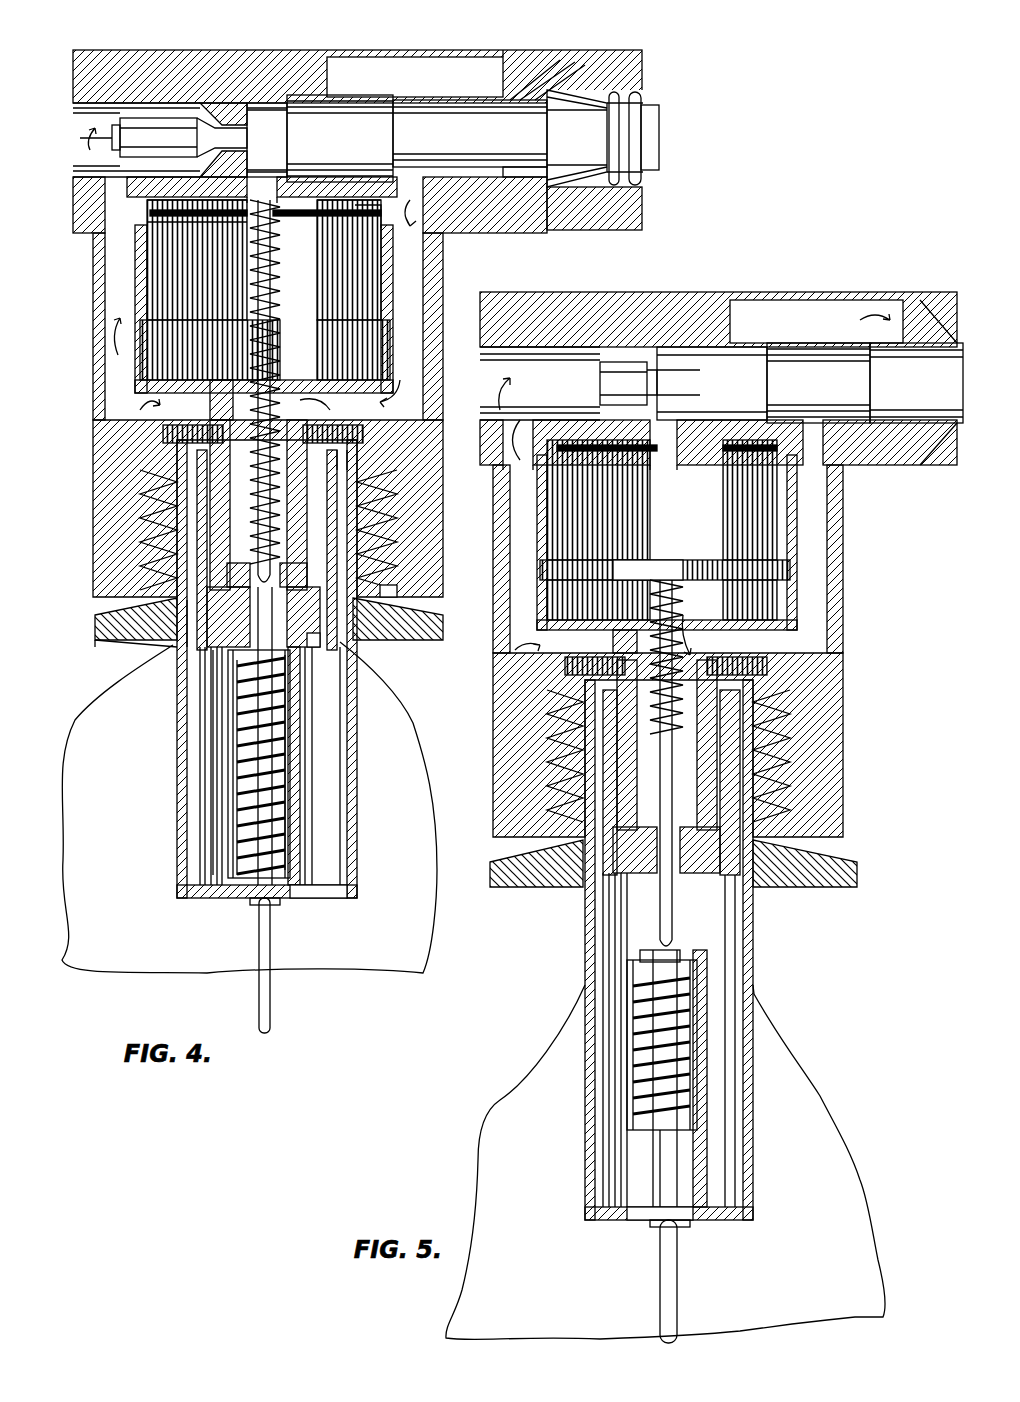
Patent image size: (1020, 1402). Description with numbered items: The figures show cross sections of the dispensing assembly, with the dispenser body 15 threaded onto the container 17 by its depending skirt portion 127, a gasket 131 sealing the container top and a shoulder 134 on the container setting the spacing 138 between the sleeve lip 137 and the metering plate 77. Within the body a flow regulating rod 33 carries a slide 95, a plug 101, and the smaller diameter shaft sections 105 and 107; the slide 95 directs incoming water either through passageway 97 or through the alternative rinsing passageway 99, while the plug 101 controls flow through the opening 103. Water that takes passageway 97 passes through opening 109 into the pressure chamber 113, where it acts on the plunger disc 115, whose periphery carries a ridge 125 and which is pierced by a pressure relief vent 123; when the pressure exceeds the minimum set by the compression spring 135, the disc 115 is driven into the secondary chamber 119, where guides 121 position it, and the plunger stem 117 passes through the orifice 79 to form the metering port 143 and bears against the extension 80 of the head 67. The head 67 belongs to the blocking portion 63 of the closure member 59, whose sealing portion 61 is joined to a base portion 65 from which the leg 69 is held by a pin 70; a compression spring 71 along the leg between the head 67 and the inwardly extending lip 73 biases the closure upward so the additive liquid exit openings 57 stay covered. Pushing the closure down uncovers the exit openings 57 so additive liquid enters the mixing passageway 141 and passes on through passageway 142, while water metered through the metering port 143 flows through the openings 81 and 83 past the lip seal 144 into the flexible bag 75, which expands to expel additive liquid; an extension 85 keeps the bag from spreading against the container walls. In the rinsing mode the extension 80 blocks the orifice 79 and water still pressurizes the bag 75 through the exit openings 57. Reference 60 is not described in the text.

In FIG. 4, the dispenser body 15 is at (580, 39).
In FIG. 5, the dispenser body 15 is at (854, 633).
In FIG. 4, the container 17 is at (98, 647).
In FIG. 4, the flow regulating rod 33 is at (676, 134).
In FIG. 5, the flow regulating rod 33 is at (895, 367).
In FIG. 4, the additive liquid exit openings 57 is at (340, 500).
In FIG. 5, the additive liquid exit openings 57 is at (722, 742).
In FIG. 4, the closure member 59 is at (178, 803).
In FIG. 5, the closure member 59 is at (754, 1123).
In FIG. 4, the sleeve shoulder 60 is at (345, 463).
In FIG. 4, the sealing portion 61 is at (348, 821).
In FIG. 4, the blocking portion 63 is at (250, 727).
In FIG. 5, the blocking portion 63 is at (672, 1160).
In FIG. 4, the base portion 65 is at (302, 898).
In FIG. 4, the head 67 is at (300, 682).
In FIG. 5, the head 67 is at (700, 968).
In FIG. 4, the leg 69 is at (282, 775).
In FIG. 4, the pin 70 is at (278, 902).
In FIG. 5, the pin 70 is at (592, 1242).
In FIG. 4, the compression spring 71 is at (285, 736).
In FIG. 5, the compression spring 71 is at (685, 1043).
In FIG. 4, the inwardly extending lip 73 is at (179, 933).
In FIG. 4, the flexible bag 75 is at (62, 958).
In FIG. 5, the flexible bag 75 is at (473, 1125).
In FIG. 4, the metering plate 77 is at (200, 622).
In FIG. 4, the orifice 79 is at (372, 600).
In FIG. 4, the extension 80 is at (330, 637).
In FIG. 5, the extension 80 is at (650, 957).
In FIG. 4, the openings 81 is at (215, 678).
In FIG. 5, the openings 81 is at (700, 907).
In FIG. 4, the openings 83 is at (320, 897).
In FIG. 5, the openings 83 is at (720, 1220).
In FIG. 4, the extension 85 is at (272, 1000).
In FIG. 4, the slide 95 is at (313, 98).
In FIG. 5, the slide 95 is at (822, 352).
In FIG. 4, the passageway 97 is at (388, 67).
In FIG. 5, the passageway 97 is at (748, 307).
In FIG. 4, the passageway 99 is at (413, 285).
In FIG. 5, the passageway 99 is at (812, 500).
In FIG. 4, the plug 101 is at (140, 120).
In FIG. 5, the plug 101 is at (613, 377).
In FIG. 4, the opening 103 is at (220, 120).
In FIG. 5, the opening 103 is at (617, 360).
In FIG. 5, the shaft section 105 is at (743, 383).
In FIG. 4, the shaft section 107 is at (445, 126).
In FIG. 4, the opening 109 is at (265, 188).
In FIG. 5, the opening 109 is at (646, 422).
In FIG. 4, the pressure chamber 113 is at (285, 287).
In FIG. 5, the pressure chamber 113 is at (665, 482).
In FIG. 4, the plunger disc 115 is at (365, 215).
In FIG. 5, the plunger disc 115 is at (648, 577).
In FIG. 4, the plunger stem 117 is at (268, 250).
In FIG. 5, the plunger stem 117 is at (688, 937).
In FIG. 4, the secondary chamber 119 is at (275, 350).
In FIG. 5, the secondary chamber 119 is at (678, 609).
In FIG. 4, the guides 121 is at (272, 316).
In FIG. 4, the pressure relief vent 123 is at (165, 245).
In FIG. 5, the pressure relief vent 123 is at (607, 573).
In FIG. 4, the ridge 125 is at (175, 222).
In FIG. 4, the skirt portion 127 is at (105, 522).
In FIG. 4, the gasket 131 is at (150, 440).
In FIG. 4, the shoulder 134 is at (130, 615).
In FIG. 5, the compression spring 135 is at (693, 643).
In FIG. 4, the lip 137 is at (340, 578).
In FIG. 4, the spacing 138 is at (250, 585).
In FIG. 4, the mixing passageway 141 is at (210, 483).
In FIG. 5, the mixing passageway 141 is at (620, 718).
In FIG. 4, the passageway 142 is at (115, 325).
In FIG. 5, the passageway 142 is at (503, 662).
In FIG. 5, the metering port 143 is at (615, 867).
In FIG. 4, the lip seal 144 is at (330, 525).
In FIG. 5, the lip seal 144 is at (752, 870).